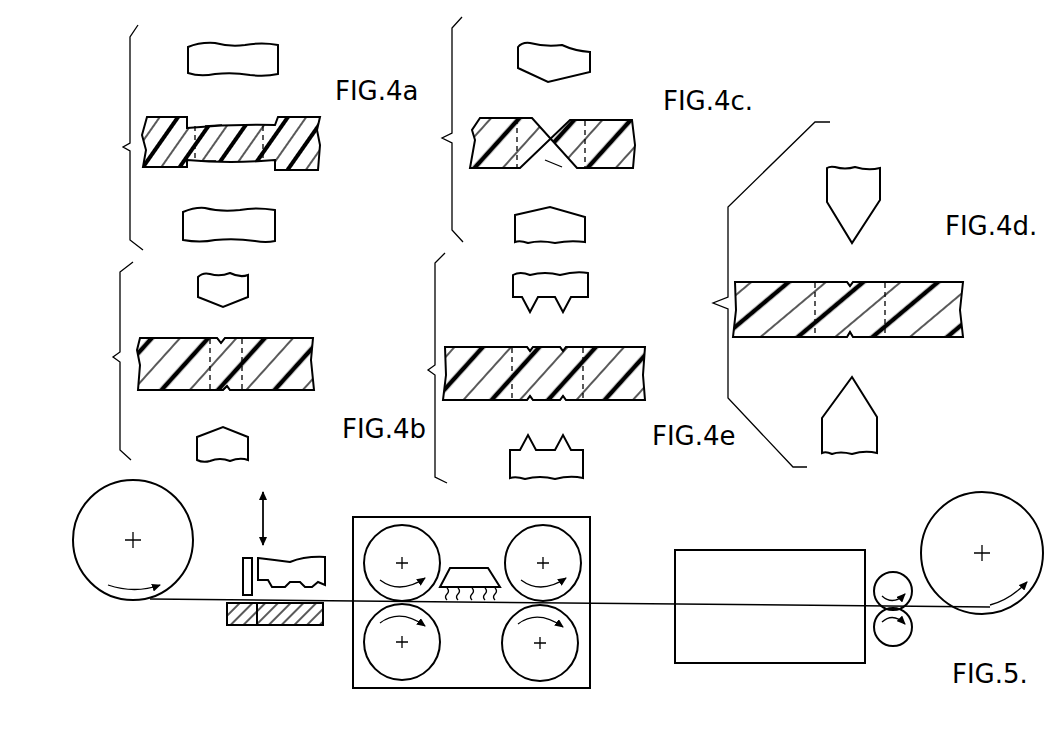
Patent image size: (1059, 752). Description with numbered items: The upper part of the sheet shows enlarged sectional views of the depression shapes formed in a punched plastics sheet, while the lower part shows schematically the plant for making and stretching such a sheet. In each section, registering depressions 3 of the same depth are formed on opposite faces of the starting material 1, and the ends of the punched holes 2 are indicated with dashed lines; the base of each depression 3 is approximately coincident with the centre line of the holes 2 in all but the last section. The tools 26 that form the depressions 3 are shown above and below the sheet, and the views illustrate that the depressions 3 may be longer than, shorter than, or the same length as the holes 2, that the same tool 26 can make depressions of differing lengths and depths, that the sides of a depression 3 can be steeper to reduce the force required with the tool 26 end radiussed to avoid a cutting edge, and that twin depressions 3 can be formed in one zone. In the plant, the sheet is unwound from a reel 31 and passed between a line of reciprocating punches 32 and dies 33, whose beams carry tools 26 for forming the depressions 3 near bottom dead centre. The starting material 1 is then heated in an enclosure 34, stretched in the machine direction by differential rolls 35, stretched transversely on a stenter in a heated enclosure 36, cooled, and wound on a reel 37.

In FIG. 4a, the starting material 1 is at (170, 112).
In FIG. 4b, the starting material 1 is at (163, 338).
In FIG. 4c, the starting material 1 is at (492, 117).
In FIG. 4d, the starting material 1 is at (773, 280).
In FIG. 4e, the starting material 1 is at (478, 343).
In FIG. 5, the starting material 1 is at (335, 598).
In FIG. 4a, the holes 2 is at (245, 133).
In FIG. 4b, the holes 2 is at (267, 339).
In FIG. 4c, the holes 2 is at (573, 133).
In FIG. 4d, the holes 2 is at (870, 303).
In FIG. 4e, the holes 2 is at (580, 373).
In FIG. 4a, the depressions 3 is at (213, 125).
In FIG. 4b, the depressions 3 is at (221, 342).
In FIG. 4c, the depressions 3 is at (563, 125).
In FIG. 4d, the depressions 3 is at (852, 283).
In FIG. 4e, the depressions 3 is at (530, 347).
In FIG. 4a, the tools 26 is at (263, 67).
In FIG. 4b, the tools 26 is at (240, 287).
In FIG. 4c, the tools 26 is at (578, 63).
In FIG. 4d, the tools 26 is at (873, 192).
In FIG. 4e, the tools 26 is at (577, 288).
In FIG. 5, the tools 26 is at (300, 563).
In FIG. 5, the reel 31 is at (140, 497).
In FIG. 5, the reciprocating punches 32 is at (245, 558).
In FIG. 5, the dies 33 is at (245, 618).
In FIG. 5, the enclosure 34 is at (475, 533).
In FIG. 5, the differential rolls 35 is at (520, 662).
In FIG. 5, the heated enclosure 36 is at (717, 557).
In FIG. 5, the reel 37 is at (955, 523).